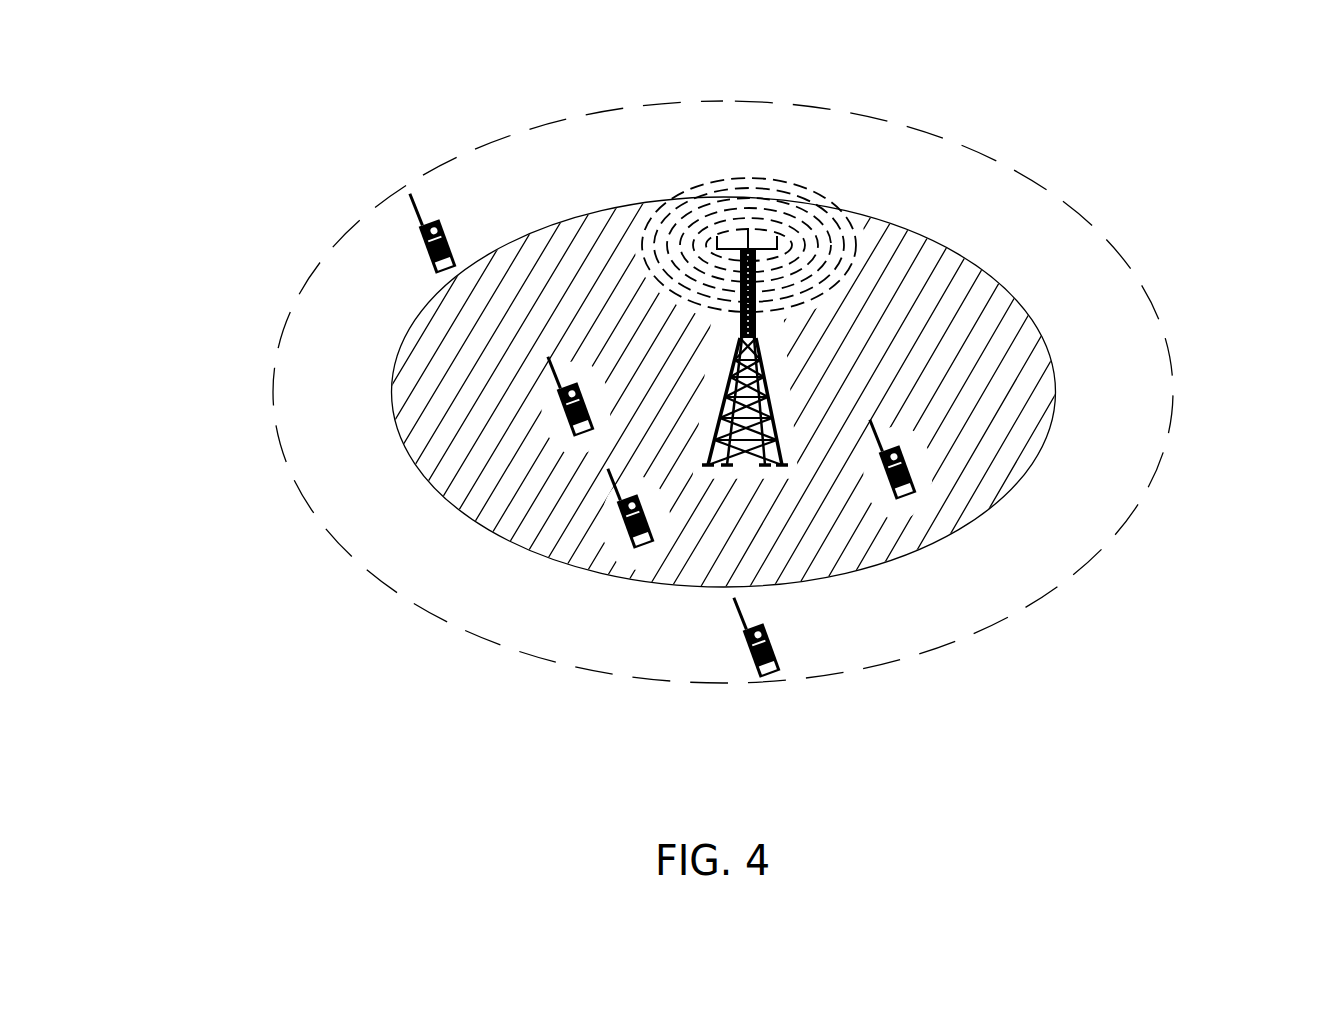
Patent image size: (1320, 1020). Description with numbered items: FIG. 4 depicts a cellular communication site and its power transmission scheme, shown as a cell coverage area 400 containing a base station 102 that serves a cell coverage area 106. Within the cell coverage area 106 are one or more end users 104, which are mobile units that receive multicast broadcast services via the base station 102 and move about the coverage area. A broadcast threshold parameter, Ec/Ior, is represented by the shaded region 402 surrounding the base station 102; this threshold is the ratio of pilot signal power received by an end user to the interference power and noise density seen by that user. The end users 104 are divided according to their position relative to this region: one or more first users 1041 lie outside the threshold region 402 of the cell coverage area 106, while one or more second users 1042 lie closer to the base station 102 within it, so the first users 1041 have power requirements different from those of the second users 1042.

The cell coverage area 400 is at (375, 110).
The base station 102 is at (760, 360).
The end users 104 is at (692, 490).
The first users 1041 is at (930, 768).
The second users 1042 is at (565, 420).
The cell coverage area 106 is at (700, 92).
The shaded region 402 is at (975, 378).